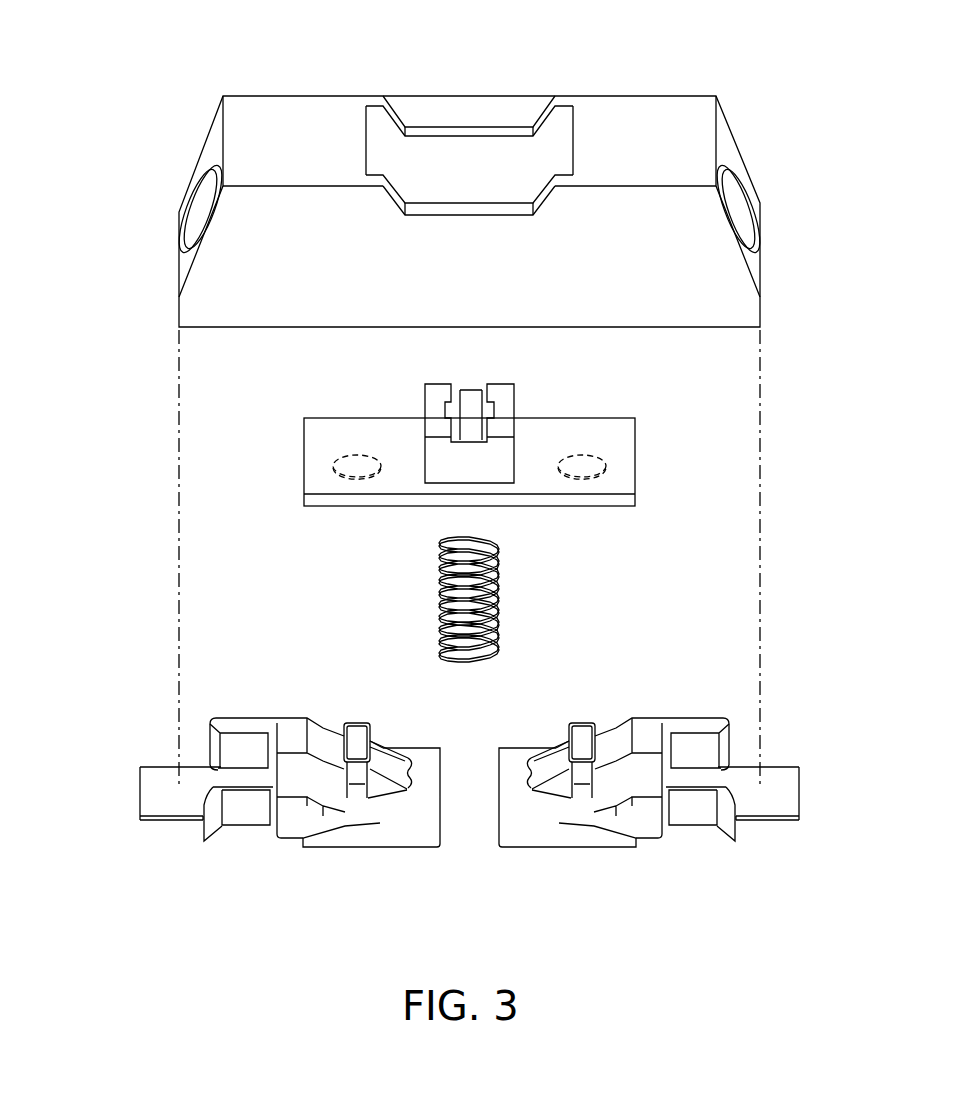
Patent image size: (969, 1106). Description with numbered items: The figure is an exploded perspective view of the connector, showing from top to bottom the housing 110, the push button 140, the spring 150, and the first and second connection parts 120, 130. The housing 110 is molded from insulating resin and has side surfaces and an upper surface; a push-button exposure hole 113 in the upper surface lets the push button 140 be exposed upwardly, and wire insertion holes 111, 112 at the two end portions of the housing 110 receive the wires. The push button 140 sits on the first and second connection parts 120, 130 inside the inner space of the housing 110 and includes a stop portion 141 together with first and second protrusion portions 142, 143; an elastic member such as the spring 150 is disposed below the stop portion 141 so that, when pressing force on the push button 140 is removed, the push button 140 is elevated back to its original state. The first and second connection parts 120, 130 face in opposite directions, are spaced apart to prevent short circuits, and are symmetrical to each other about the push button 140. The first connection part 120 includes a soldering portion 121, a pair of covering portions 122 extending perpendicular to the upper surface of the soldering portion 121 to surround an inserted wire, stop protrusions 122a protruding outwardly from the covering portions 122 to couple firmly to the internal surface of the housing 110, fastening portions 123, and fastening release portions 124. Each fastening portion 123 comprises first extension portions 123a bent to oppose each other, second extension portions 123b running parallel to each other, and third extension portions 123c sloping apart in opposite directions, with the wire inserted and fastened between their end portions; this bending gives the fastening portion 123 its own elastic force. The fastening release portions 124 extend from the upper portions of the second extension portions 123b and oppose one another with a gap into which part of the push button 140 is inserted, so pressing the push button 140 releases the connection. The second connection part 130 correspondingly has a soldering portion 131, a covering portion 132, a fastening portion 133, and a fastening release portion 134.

The housing 110 is at (256, 72).
The wire insertion hole 111 is at (200, 200).
The wire insertion hole 112 is at (739, 200).
The push-button exposure hole 113 is at (456, 167).
The first connection part 120 is at (233, 703).
The soldering portion 121 is at (150, 791).
The covering portion 122 is at (243, 808).
The stop protrusion 122a is at (214, 838).
The fastening portion 123 is at (368, 846).
The first extension portion 123a is at (270, 808).
The second extension portion 123b is at (320, 823).
The third extension portion 123c is at (421, 824).
The fastening release portion 124 is at (358, 506).
The second connection part 130 is at (707, 703).
The soldering portion 131 is at (789, 791).
The covering portion 132 is at (697, 808).
The fastening portion 133 is at (538, 830).
The fastening release portion 134 is at (581, 506).
The push button 140 is at (545, 387).
The stop portion 141 is at (622, 445).
The first protrusion portion 142 is at (353, 485).
The second protrusion portion 143 is at (586, 485).
The spring 150 is at (525, 612).